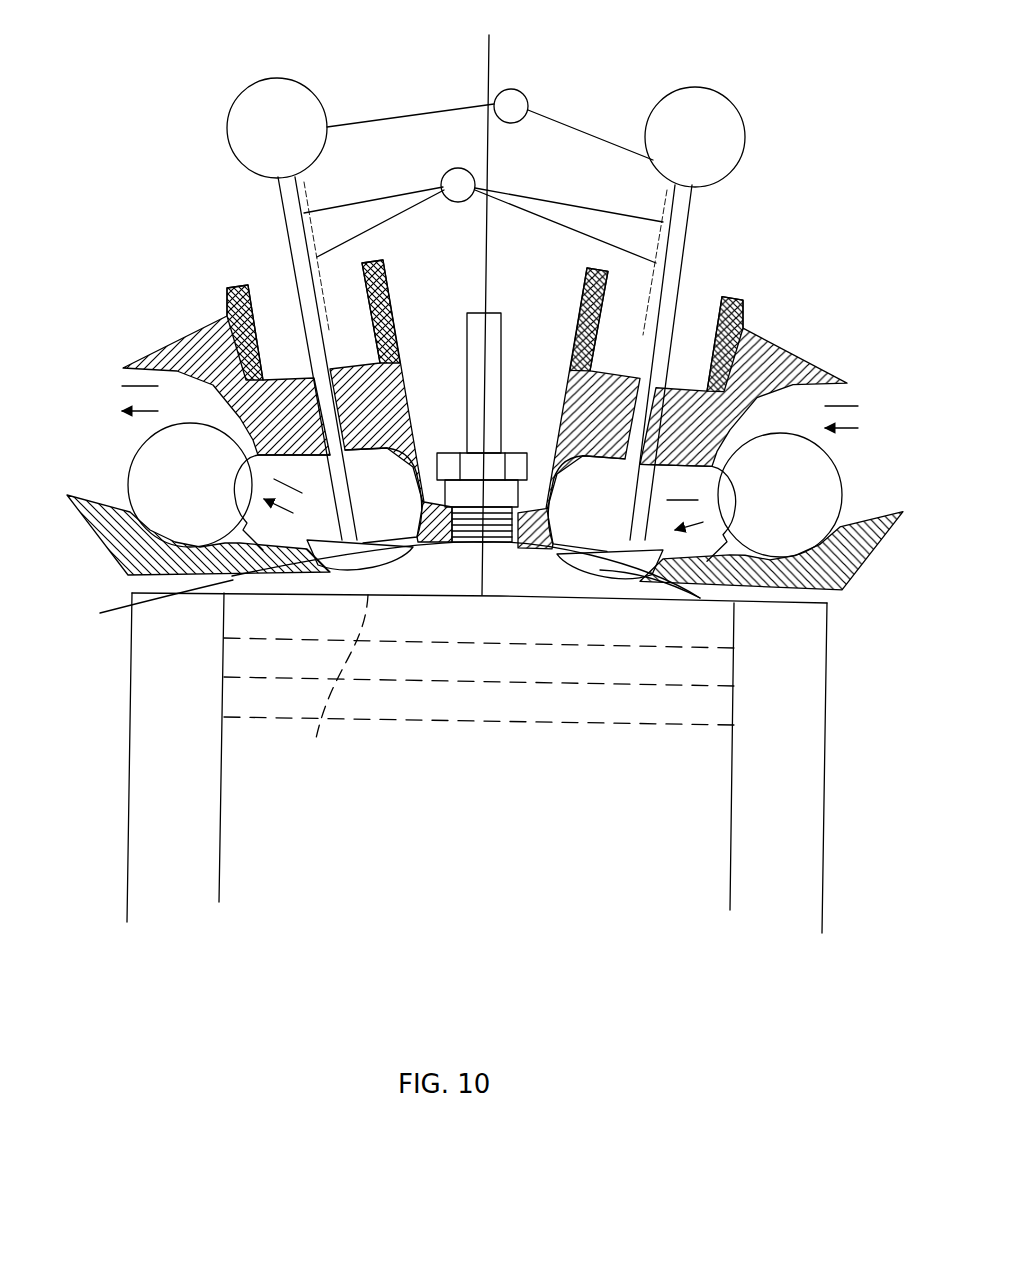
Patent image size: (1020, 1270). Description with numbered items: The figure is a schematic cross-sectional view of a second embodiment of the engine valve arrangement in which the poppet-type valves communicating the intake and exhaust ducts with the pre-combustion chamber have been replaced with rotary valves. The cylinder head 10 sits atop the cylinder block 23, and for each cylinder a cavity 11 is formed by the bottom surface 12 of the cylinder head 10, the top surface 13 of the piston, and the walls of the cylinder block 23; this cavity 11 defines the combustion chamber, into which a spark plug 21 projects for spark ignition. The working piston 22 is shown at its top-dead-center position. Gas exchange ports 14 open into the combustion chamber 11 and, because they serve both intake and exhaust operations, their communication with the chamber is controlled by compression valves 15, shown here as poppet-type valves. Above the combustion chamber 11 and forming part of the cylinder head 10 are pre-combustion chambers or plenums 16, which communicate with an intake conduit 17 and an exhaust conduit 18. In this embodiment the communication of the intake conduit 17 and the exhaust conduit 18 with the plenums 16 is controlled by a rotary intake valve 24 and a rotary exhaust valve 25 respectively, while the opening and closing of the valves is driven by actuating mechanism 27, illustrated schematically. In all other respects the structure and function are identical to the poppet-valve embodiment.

The cylinder head 10 is at (757, 374).
The cavity 11 is at (513, 570).
The bottom surface 12 is at (257, 577).
The top surface 13 is at (334, 686).
The gas exchange port 14 is at (667, 563).
The compression valve 15 is at (233, 577).
The pre-combustion chamber 16 is at (330, 534).
The intake conduit 17 is at (797, 592).
The exhaust conduit 18 is at (100, 520).
The spark plug 21 is at (487, 312).
The working piston 22 is at (693, 832).
The cylinder block 23 is at (810, 870).
The rotary intake valve 24 is at (815, 498).
The rotary exhaust valve 25 is at (142, 480).
The valve actuating mechanism 27 is at (338, 106).